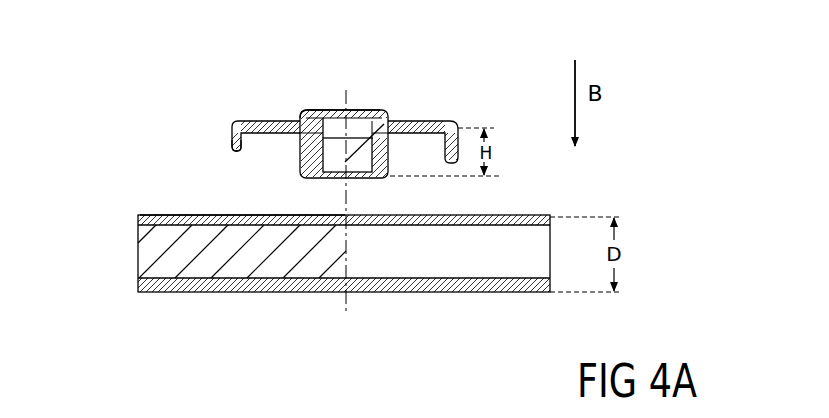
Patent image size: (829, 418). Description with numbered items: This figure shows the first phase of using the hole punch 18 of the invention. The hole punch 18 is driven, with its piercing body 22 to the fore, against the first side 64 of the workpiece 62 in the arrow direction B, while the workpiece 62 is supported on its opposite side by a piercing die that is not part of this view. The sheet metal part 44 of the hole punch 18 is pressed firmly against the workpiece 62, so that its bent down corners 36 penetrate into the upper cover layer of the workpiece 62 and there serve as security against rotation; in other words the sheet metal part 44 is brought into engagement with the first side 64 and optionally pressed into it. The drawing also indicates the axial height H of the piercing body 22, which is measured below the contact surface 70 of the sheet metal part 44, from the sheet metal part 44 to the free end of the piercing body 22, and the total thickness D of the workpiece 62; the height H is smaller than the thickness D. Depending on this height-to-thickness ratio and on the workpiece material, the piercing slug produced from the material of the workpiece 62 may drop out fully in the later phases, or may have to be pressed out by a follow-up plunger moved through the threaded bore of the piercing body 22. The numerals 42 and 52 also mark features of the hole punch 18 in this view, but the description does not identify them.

The hole punch 18 is at (300, 105).
The piercing body 22 is at (305, 162).
The bent down corners 36 is at (239, 122).
The corner portion 42 is at (312, 109).
The sheet metal part 44 is at (416, 120).
The top plate 52 is at (320, 108).
The workpiece 62 is at (534, 222).
The first side 64 is at (147, 212).
The contact surface 70 is at (258, 137).